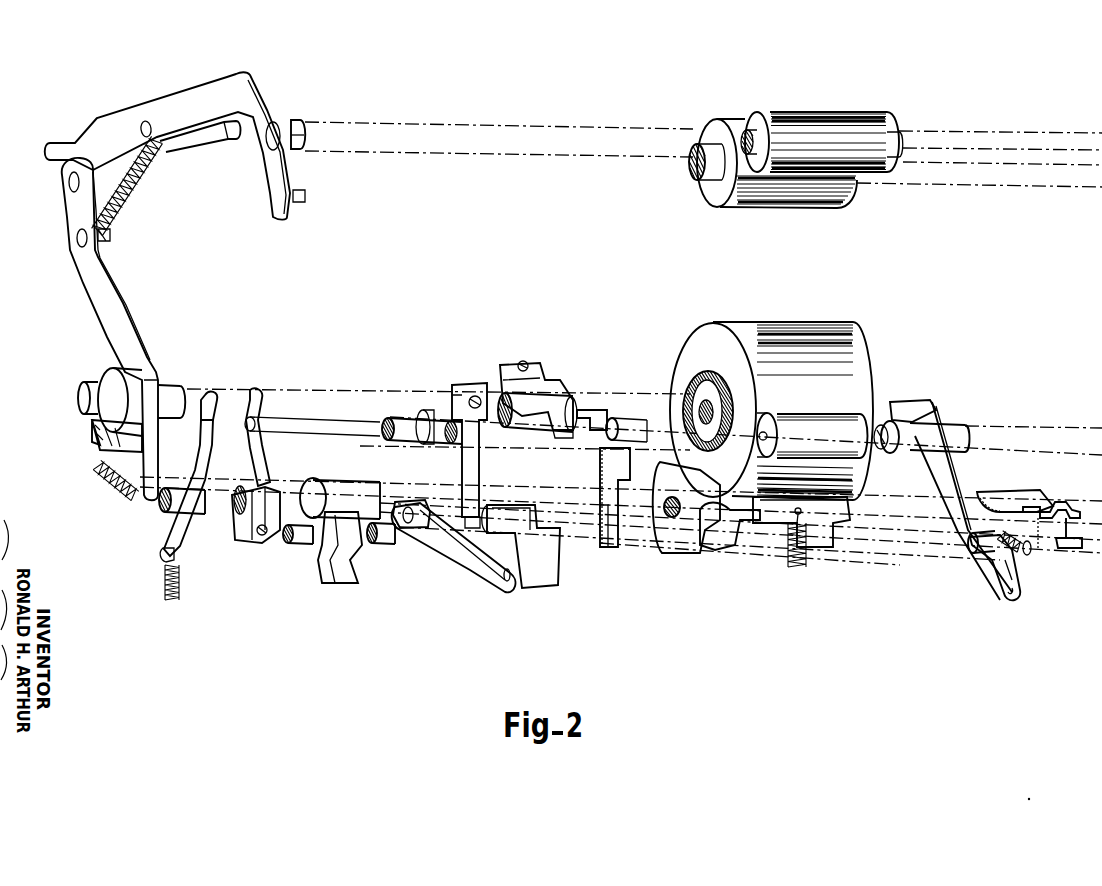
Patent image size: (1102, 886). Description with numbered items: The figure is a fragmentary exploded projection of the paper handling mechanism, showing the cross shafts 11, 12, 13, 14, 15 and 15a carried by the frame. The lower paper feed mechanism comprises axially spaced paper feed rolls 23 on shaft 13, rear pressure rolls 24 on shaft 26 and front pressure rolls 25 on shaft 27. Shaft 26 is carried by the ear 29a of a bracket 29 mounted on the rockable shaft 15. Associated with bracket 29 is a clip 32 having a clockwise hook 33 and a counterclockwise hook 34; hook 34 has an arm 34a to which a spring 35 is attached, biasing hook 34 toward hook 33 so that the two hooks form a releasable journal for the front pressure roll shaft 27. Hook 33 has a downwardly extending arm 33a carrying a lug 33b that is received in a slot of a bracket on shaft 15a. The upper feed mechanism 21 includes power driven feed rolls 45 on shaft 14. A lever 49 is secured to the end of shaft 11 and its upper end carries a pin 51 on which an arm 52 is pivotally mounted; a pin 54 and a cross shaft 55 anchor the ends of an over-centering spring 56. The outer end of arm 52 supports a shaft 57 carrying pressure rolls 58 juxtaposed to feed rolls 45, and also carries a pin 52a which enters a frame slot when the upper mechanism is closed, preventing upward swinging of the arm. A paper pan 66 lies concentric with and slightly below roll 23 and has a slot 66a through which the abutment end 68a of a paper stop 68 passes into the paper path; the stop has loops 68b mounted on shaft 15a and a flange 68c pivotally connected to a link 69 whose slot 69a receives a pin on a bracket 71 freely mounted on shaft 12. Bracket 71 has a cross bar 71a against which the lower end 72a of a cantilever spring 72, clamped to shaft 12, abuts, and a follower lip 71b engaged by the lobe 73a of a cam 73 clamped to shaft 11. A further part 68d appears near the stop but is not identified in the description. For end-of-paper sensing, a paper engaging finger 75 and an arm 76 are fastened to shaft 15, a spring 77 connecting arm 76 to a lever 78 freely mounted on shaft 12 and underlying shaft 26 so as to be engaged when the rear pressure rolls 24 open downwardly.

The cross shaft 11 is at (166, 386).
The cross shaft 12 is at (946, 428).
The cross shaft 13 is at (684, 394).
The cross shaft 14 is at (689, 180).
The cross shaft 15 is at (388, 550).
The cross shaft 15a is at (182, 490).
The upper feed mechanism 21 is at (741, 110).
The paper feed rolls 23 is at (860, 345).
The rear pressure rolls 24 is at (688, 478).
The front pressure rolls 25 is at (840, 425).
The shaft 26 is at (338, 490).
The front pressure roll shaft 27 is at (268, 420).
The bracket 29 is at (360, 570).
The ear 29a is at (305, 482).
The clip 32 is at (180, 570).
The clockwise hook 33 is at (258, 397).
The downwardly extending arm 33a is at (246, 525).
The lug 33b is at (266, 535).
The counterclockwise hook 34 is at (213, 407).
The arm 34a is at (164, 552).
The spring 35 is at (163, 590).
The power driven feed rolls 45 is at (706, 192).
The lever 49 is at (88, 286).
The pin 51 is at (68, 183).
The arm 52 is at (164, 103).
The pin 52a is at (307, 197).
The pin 54 is at (112, 236).
The cross shaft 55 is at (224, 140).
The over-centering spring 56 is at (140, 190).
The shaft 57 is at (297, 118).
The pressure rolls 58 is at (852, 125).
The paper pan 66 is at (1026, 470).
The slot 66a is at (1034, 505).
The paper stop 68 is at (570, 581).
The abutment end 68a is at (1090, 490).
The loops 68b is at (848, 505).
The flange 68c is at (525, 590).
The spring 68d is at (806, 562).
The link 69 is at (462, 575).
The slot 69a is at (402, 504).
The bracket 71 is at (592, 488).
The cross bar 71a is at (600, 548).
The follower lip 71b is at (584, 408).
The cantilever spring 72 is at (482, 462).
The lower end 72a is at (470, 530).
The cam 73 is at (553, 368).
The lobe 73a is at (560, 440).
The finger 75 is at (704, 552).
The arm 76 is at (1030, 556).
The spring 77 is at (1020, 586).
The lever 78 is at (952, 468).